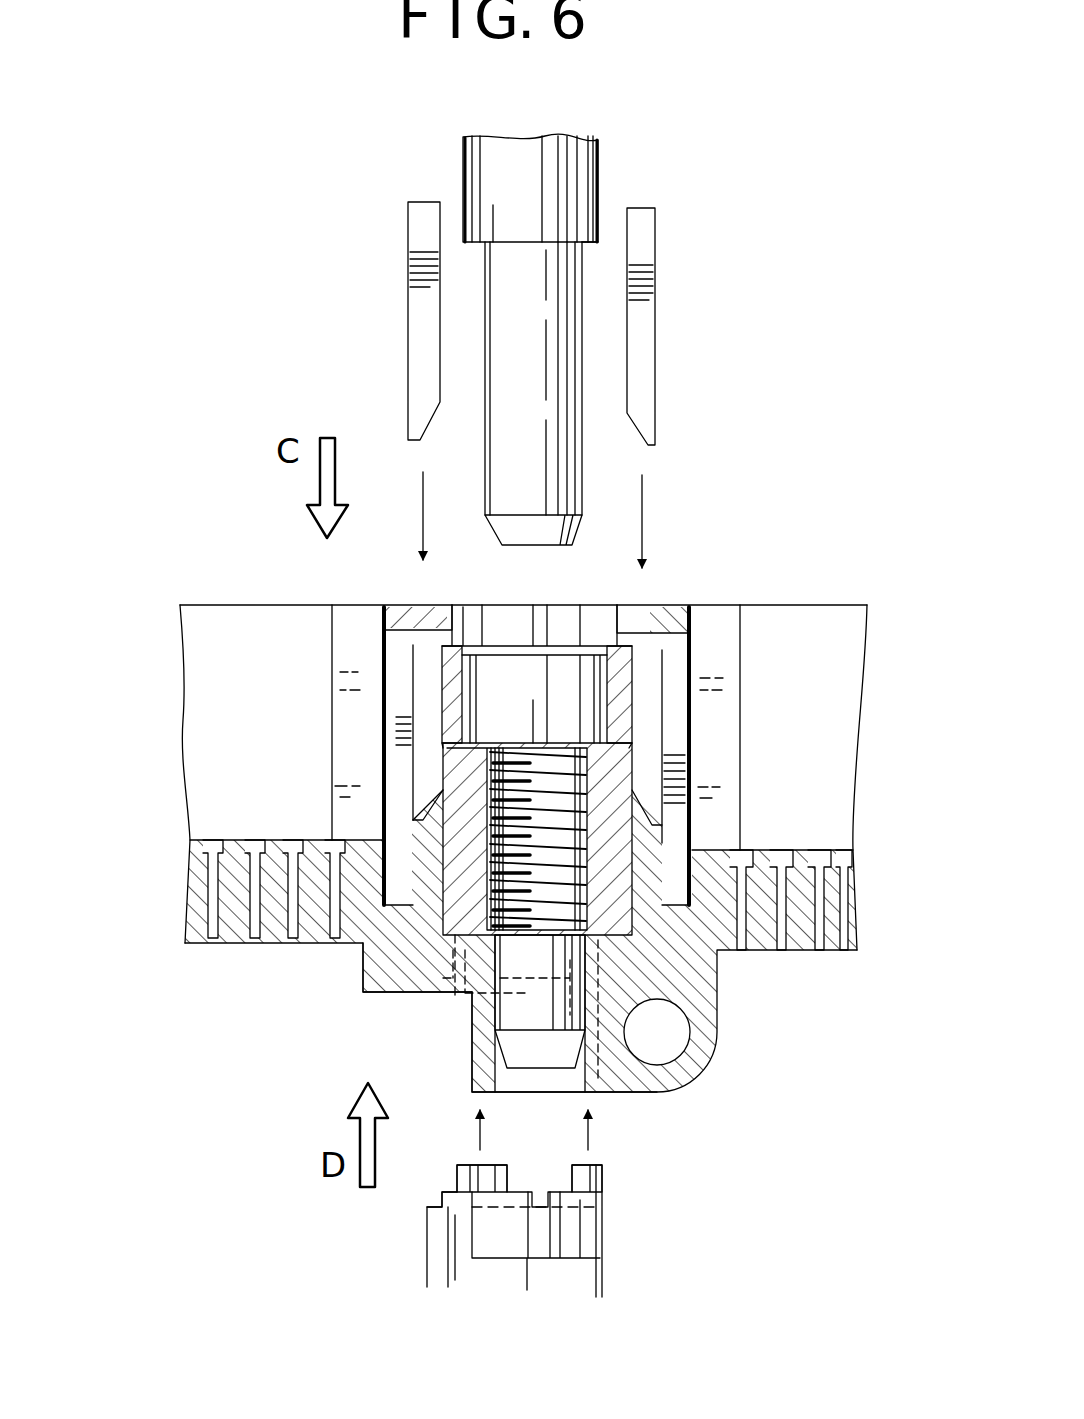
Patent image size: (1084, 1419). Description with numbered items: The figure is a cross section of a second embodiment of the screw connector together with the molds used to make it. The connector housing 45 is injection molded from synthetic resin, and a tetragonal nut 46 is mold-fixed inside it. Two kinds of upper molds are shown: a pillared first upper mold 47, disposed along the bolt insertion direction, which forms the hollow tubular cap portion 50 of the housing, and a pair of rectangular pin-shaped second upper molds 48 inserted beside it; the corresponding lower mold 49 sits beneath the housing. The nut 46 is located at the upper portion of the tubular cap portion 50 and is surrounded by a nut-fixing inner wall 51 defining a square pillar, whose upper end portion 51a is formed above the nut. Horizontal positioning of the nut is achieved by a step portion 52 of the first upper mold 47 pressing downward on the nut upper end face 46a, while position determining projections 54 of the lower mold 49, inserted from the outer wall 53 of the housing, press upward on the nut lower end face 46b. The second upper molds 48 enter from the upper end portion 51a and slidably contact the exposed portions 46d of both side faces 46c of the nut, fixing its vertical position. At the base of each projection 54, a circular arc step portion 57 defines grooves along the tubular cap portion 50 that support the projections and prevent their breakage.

The connector housing 45 is at (762, 960).
The tetragonal nut 46 is at (613, 770).
The nut upper end face 46a is at (470, 738).
The nut lower end face 46b is at (455, 985).
The side faces of nut 46c is at (413, 830).
The exposed portions of side faces 46d is at (443, 755).
The first upper mold 47 is at (575, 175).
The second upper molds 48 is at (645, 350).
The lower mold 49 is at (603, 1233).
The tubular cap portion 50 is at (473, 1080).
The nut-fixing inner wall 51 is at (650, 847).
The upper end portion of nut-fixing inner wall 51a is at (618, 690).
The step portion 52 is at (590, 245).
The outer wall 53 is at (400, 993).
The position determining projections 54 is at (585, 1185).
The circular arc step portion 57 is at (437, 1195).